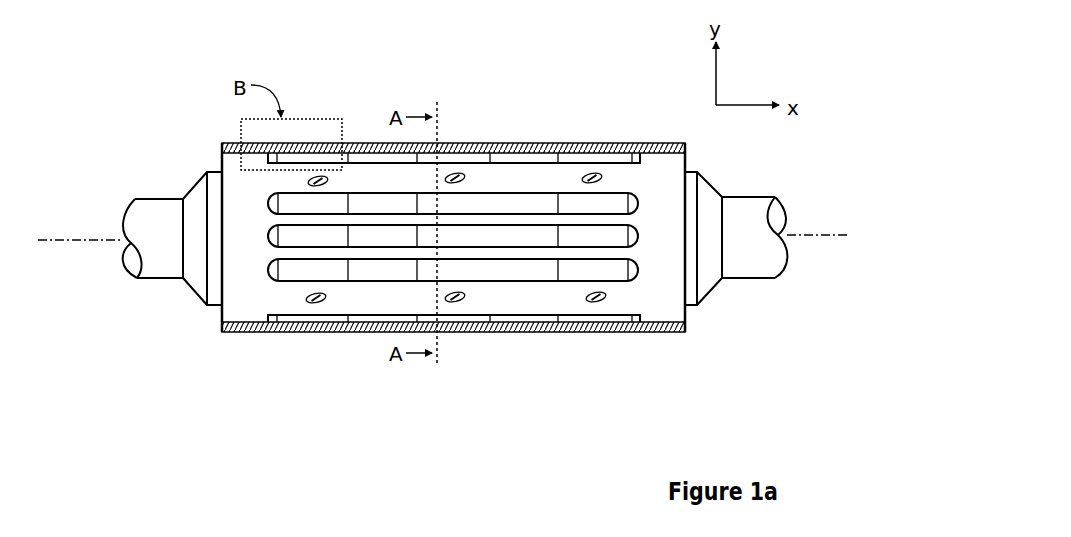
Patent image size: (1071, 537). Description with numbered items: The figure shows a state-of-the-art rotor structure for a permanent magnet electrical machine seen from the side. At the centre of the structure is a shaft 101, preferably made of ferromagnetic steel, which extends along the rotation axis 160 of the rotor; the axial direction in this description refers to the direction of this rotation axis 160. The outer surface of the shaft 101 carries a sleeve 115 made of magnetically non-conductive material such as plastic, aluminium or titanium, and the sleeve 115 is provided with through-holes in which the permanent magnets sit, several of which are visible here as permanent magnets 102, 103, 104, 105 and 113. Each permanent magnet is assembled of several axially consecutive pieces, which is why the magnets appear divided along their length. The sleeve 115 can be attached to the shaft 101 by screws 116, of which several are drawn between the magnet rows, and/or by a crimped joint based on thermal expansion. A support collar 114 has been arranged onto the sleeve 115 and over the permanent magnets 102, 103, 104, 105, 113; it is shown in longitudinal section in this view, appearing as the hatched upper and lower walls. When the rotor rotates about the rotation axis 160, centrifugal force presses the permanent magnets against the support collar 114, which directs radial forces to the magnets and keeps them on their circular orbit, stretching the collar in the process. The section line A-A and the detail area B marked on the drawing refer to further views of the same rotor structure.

The shaft 101 is at (712, 184).
The permanent magnet 102 is at (467, 238).
The permanent magnet 103 is at (467, 268).
The permanent magnet 104 is at (480, 203).
The permanent magnet 105 is at (448, 158).
The permanent magnet 113 is at (453, 317).
The support collar 114 is at (655, 143).
The sleeve 115 is at (687, 308).
The screws 116 is at (607, 297).
The rotation axis 160 is at (817, 237).